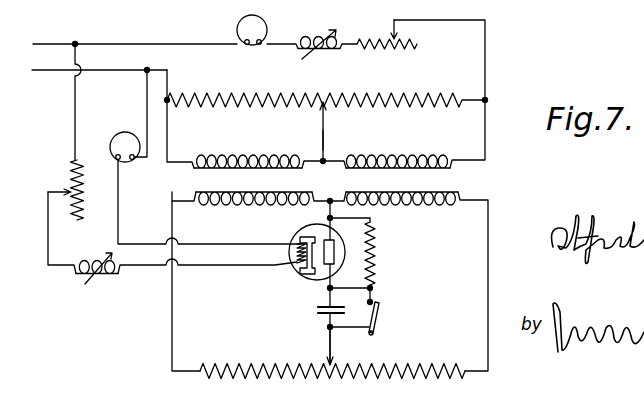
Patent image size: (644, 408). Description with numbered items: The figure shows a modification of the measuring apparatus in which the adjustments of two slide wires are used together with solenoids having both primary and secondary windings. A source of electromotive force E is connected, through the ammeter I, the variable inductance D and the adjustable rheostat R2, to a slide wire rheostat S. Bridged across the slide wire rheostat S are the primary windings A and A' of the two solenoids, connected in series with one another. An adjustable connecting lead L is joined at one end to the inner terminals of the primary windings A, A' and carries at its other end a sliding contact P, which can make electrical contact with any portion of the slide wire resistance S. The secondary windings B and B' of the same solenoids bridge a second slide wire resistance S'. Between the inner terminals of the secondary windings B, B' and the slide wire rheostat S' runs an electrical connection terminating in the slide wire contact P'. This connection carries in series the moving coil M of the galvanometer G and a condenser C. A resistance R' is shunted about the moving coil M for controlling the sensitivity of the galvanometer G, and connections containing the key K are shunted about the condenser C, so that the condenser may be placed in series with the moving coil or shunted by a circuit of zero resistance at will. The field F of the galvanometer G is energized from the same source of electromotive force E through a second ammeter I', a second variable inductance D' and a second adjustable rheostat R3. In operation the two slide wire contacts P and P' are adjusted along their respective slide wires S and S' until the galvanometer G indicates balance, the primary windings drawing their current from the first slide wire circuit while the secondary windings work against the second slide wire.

The source of electromotive force E is at (134, 57).
The ammeter I is at (263, 25).
The variable inductance D is at (328, 36).
The adjustable rheostat R2 is at (417, 47).
The slide wire rheostat S is at (326, 90).
The sliding contact P is at (340, 131).
The adjustable connecting lead L is at (325, 140).
The primary winding A is at (248, 150).
The primary winding A' is at (398, 148).
The ammeter I' is at (125, 137).
The adjustable rheostat R3 is at (70, 166).
The secondary winding B is at (254, 211).
The secondary winding B' is at (402, 209).
The moving coil M is at (336, 248).
The resistance R' is at (387, 253).
The field F is at (296, 262).
The grid H is at (303, 275).
The galvanometer G is at (310, 281).
The condenser C is at (319, 318).
The key K is at (382, 317).
The variable inductance D' is at (97, 278).
The slide wire contact P' is at (350, 347).
The slide wire resistance S' is at (332, 360).